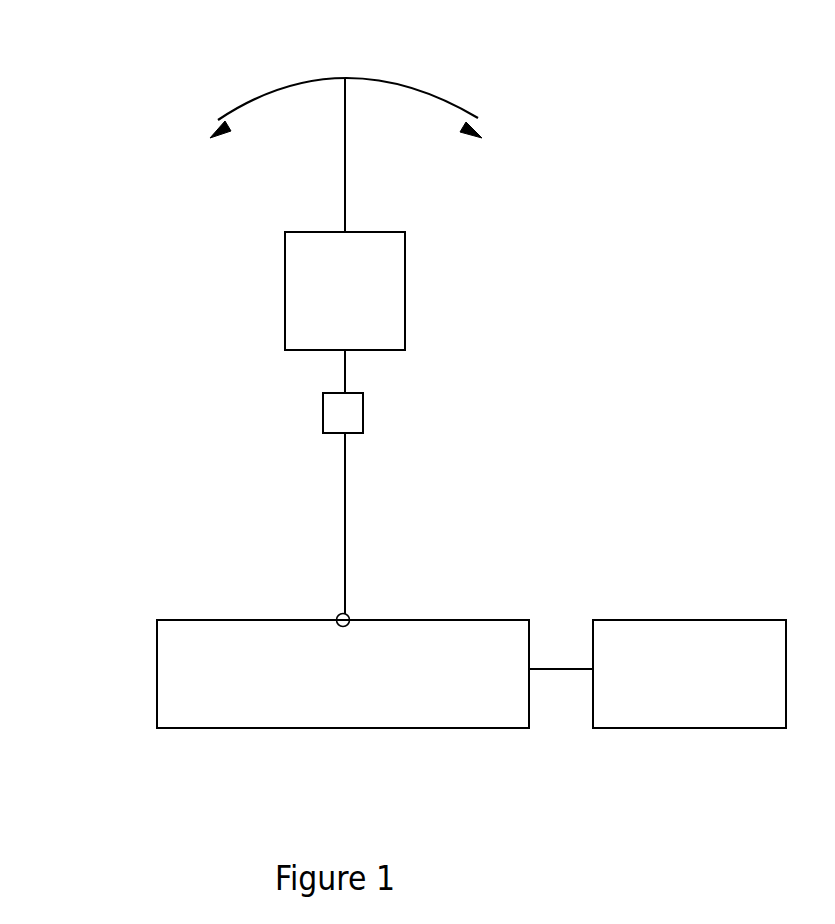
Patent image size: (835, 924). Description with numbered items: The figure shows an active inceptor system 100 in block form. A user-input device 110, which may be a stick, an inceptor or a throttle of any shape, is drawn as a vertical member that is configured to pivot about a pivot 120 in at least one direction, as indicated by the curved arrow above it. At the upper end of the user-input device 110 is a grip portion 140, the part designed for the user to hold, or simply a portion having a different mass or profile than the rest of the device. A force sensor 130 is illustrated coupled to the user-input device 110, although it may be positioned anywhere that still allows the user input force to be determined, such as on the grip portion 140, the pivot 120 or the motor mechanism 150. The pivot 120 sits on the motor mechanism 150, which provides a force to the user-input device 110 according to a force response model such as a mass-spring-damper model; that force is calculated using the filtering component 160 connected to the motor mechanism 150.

The active inceptor system 100 is at (121, 40).
The user-input device 110 is at (345, 464).
The pivot 120 is at (349, 615).
The force sensor 130 is at (363, 413).
The grip portion 140 is at (345, 291).
The motor mechanism 150 is at (343, 674).
The filtering component 160 is at (657, 674).